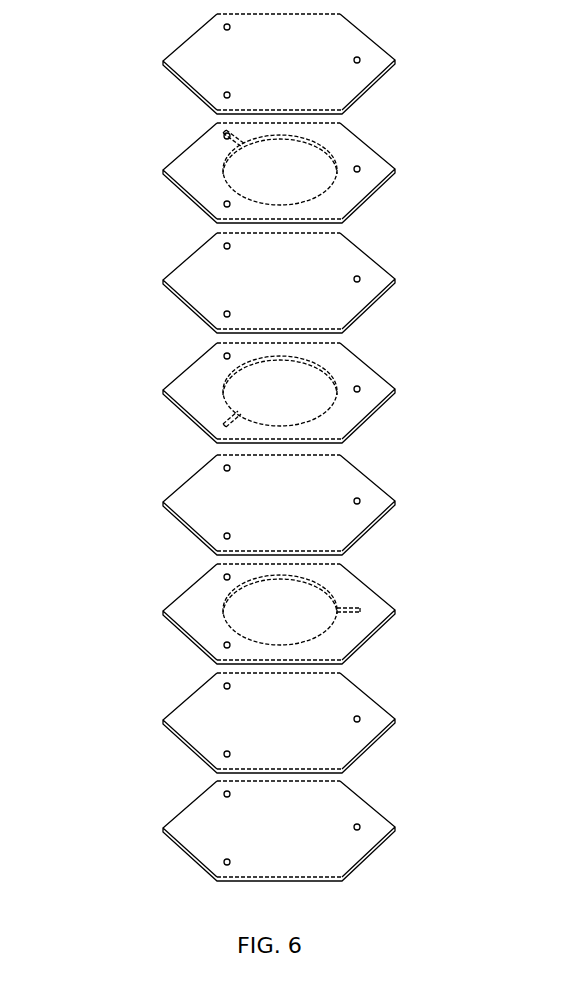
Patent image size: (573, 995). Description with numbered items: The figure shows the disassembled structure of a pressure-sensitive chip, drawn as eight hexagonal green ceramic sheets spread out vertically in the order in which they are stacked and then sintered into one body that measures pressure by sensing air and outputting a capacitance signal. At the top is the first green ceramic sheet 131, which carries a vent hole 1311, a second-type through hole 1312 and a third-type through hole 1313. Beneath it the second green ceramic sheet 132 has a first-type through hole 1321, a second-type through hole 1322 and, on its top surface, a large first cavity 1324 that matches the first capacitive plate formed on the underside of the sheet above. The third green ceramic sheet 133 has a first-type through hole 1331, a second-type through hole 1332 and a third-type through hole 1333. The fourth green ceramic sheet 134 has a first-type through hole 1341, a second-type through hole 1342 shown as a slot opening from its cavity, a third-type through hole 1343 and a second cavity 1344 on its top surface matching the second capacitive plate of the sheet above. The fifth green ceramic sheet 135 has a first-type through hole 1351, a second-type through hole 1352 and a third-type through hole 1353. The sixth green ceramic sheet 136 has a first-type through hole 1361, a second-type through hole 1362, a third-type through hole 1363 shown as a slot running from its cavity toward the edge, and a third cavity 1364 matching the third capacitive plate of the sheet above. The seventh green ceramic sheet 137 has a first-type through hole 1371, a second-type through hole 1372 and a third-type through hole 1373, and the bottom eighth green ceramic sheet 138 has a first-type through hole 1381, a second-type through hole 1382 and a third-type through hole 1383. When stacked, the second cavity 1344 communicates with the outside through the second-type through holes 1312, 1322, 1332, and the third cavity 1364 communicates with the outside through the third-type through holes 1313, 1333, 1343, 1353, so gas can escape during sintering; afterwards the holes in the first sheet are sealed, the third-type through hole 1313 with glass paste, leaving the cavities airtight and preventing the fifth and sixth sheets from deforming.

The first green ceramic sheet 131 is at (161, 61).
The vent hole 1311 is at (215, 16).
The second-type through hole 1312 is at (223, 95).
The third-type through hole 1313 is at (361, 61).
The second green ceramic sheet 132 is at (161, 170).
The first-type through hole 1321 is at (215, 125).
The second-type through hole 1322 is at (223, 204).
The first cavity 1324 is at (333, 158).
The third green ceramic sheet 133 is at (161, 280).
The first-type through hole 1331 is at (215, 235).
The second-type through hole 1332 is at (223, 314).
The third-type through hole 1333 is at (361, 280).
The fourth green ceramic sheet 134 is at (161, 390).
The first-type through hole 1341 is at (215, 345).
The second-type through hole 1342 is at (221, 424).
The third-type through hole 1343 is at (361, 390).
The second cavity 1344 is at (333, 378).
The fifth green ceramic sheet 135 is at (161, 502).
The first-type through hole 1351 is at (215, 457).
The second-type through hole 1352 is at (223, 536).
The third-type through hole 1353 is at (361, 502).
The sixth green ceramic sheet 136 is at (161, 611).
The first-type through hole 1361 is at (215, 566).
The second-type through hole 1362 is at (223, 645).
The third-type through hole 1363 is at (361, 610).
The third cavity 1364 is at (333, 595).
The seventh green ceramic sheet 137 is at (161, 720).
The first-type through hole 1371 is at (215, 675).
The second-type through hole 1372 is at (223, 754).
The third-type through hole 1373 is at (361, 720).
The eighth green ceramic sheet 138 is at (161, 828).
The first-type through hole 1381 is at (215, 783).
The second-type through hole 1382 is at (223, 862).
The third-type through hole 1383 is at (361, 828).